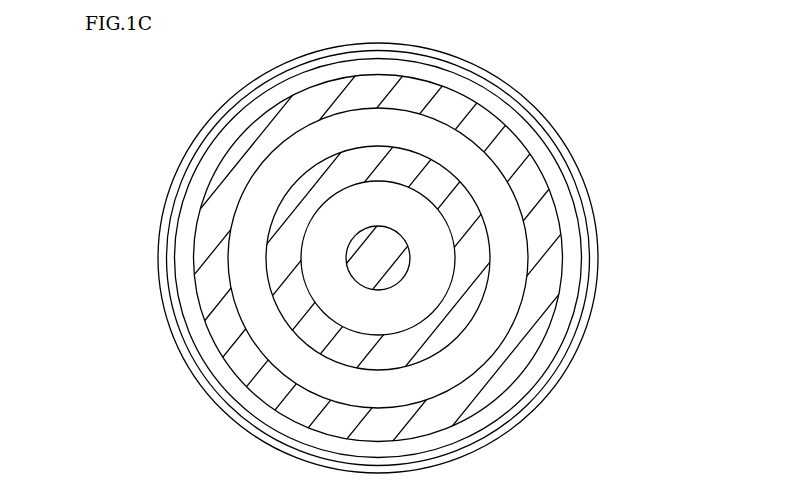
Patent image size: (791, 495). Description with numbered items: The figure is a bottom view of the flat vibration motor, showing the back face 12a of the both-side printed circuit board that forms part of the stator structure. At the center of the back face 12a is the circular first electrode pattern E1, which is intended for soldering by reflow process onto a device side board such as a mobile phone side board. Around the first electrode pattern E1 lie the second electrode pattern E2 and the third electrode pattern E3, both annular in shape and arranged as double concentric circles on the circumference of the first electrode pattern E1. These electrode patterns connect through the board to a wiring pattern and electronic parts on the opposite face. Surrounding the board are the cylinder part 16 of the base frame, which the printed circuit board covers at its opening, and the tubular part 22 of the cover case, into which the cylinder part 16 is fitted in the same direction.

The tubular part 22 is at (158, 253).
The cylinder part 16 is at (558, 368).
The back face 12a is at (498, 110).
The third electrode pattern E3 is at (543, 217).
The second electrode pattern E2 is at (473, 298).
The first electrode pattern E1 is at (395, 243).